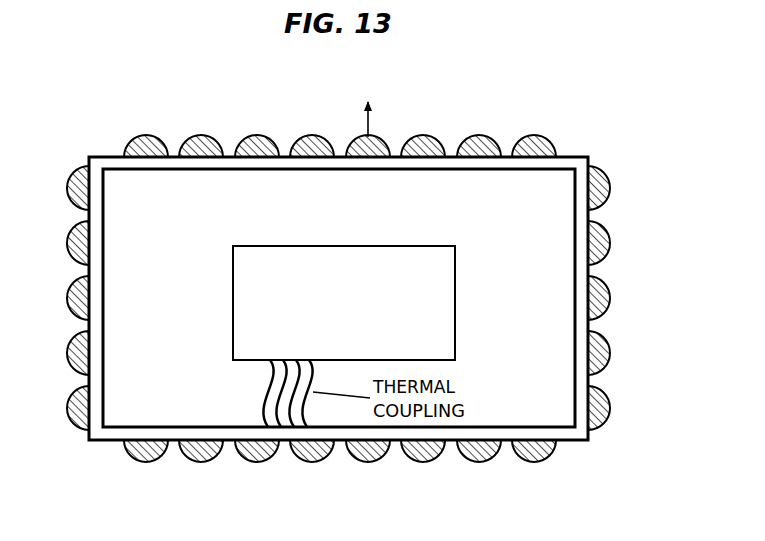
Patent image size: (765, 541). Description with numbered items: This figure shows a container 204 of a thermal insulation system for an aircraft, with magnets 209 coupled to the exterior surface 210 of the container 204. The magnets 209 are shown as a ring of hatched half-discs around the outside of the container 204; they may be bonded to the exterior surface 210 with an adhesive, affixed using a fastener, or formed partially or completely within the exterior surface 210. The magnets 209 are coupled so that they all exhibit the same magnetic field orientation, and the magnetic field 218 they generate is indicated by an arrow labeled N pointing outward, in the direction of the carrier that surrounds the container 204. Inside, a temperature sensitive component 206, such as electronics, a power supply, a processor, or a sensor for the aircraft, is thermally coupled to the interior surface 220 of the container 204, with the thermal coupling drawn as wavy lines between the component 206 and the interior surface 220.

The container 204 is at (590, 270).
The temperature sensitive component 206 is at (326, 343).
The magnets 209 is at (305, 136).
The exterior surface 210 is at (104, 152).
The magnetic field 218 is at (368, 125).
The interior surface 220 is at (201, 420).